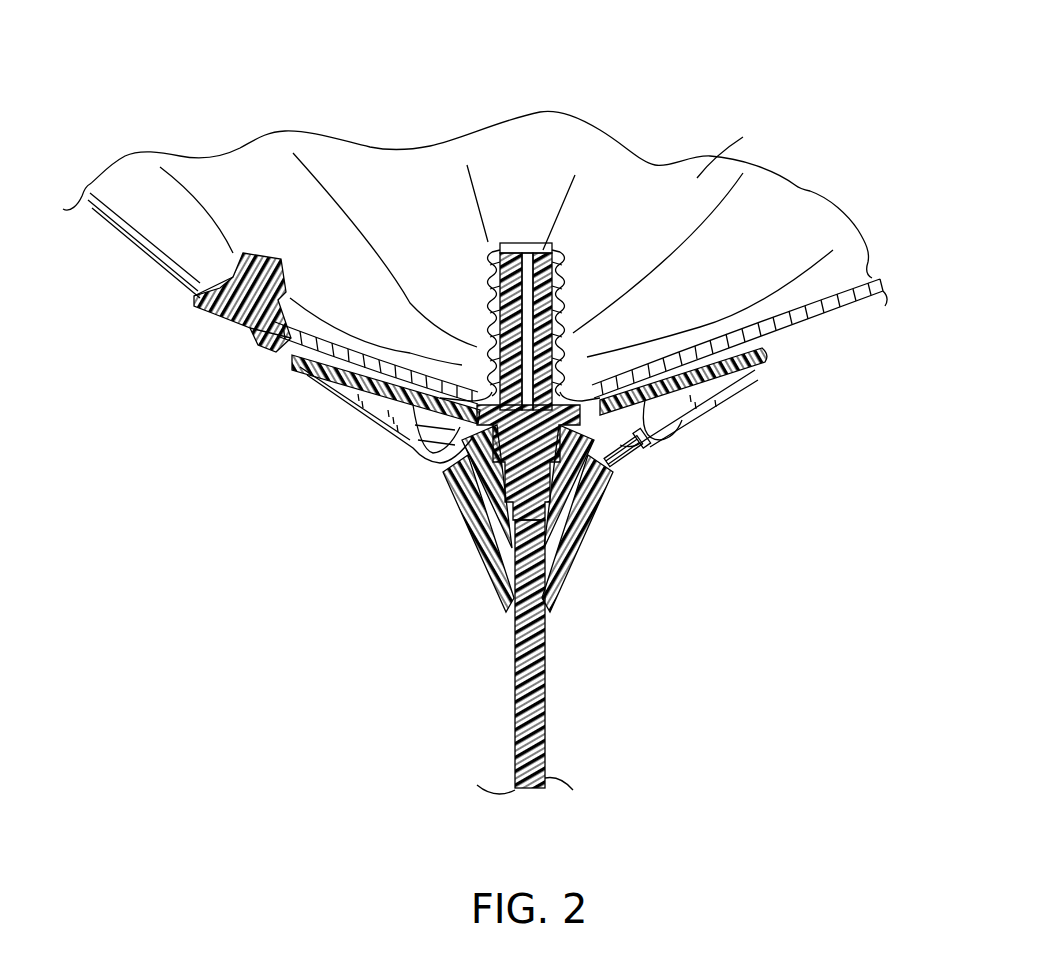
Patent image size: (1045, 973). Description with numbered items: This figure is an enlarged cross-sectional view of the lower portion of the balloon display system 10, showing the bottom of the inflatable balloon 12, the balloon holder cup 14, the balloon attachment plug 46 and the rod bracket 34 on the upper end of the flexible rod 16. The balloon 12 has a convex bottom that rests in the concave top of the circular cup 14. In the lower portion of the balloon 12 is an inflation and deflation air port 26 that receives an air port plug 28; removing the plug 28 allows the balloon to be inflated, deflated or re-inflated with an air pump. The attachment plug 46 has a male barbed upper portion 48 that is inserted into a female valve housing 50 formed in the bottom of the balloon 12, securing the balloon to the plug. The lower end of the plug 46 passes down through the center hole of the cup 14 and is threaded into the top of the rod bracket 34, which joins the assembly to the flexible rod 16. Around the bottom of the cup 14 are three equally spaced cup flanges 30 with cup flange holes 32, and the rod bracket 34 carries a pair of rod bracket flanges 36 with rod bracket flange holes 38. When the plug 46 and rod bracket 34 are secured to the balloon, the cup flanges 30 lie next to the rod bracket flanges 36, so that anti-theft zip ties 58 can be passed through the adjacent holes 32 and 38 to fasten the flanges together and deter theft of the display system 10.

The balloon display system 10 is at (655, 108).
The inflatable balloon 12 is at (700, 173).
The balloon holder cup 14 is at (293, 373).
The flexible rod 16 is at (530, 667).
The inflation and deflation air port 26 is at (258, 282).
The air port plug 28 is at (273, 310).
The cup flanges 30 is at (450, 468).
The cup flange holes 32 is at (423, 443).
The rod bracket 34 is at (478, 533).
The rod bracket flanges 36 is at (472, 541).
The rod bracket flange holes 38 is at (483, 483).
The balloon attachment plug 46 is at (433, 428).
The male barbed upper portion 48 is at (540, 255).
The female valve housing 50 is at (497, 257).
The anti-theft zip ties 58 is at (617, 470).